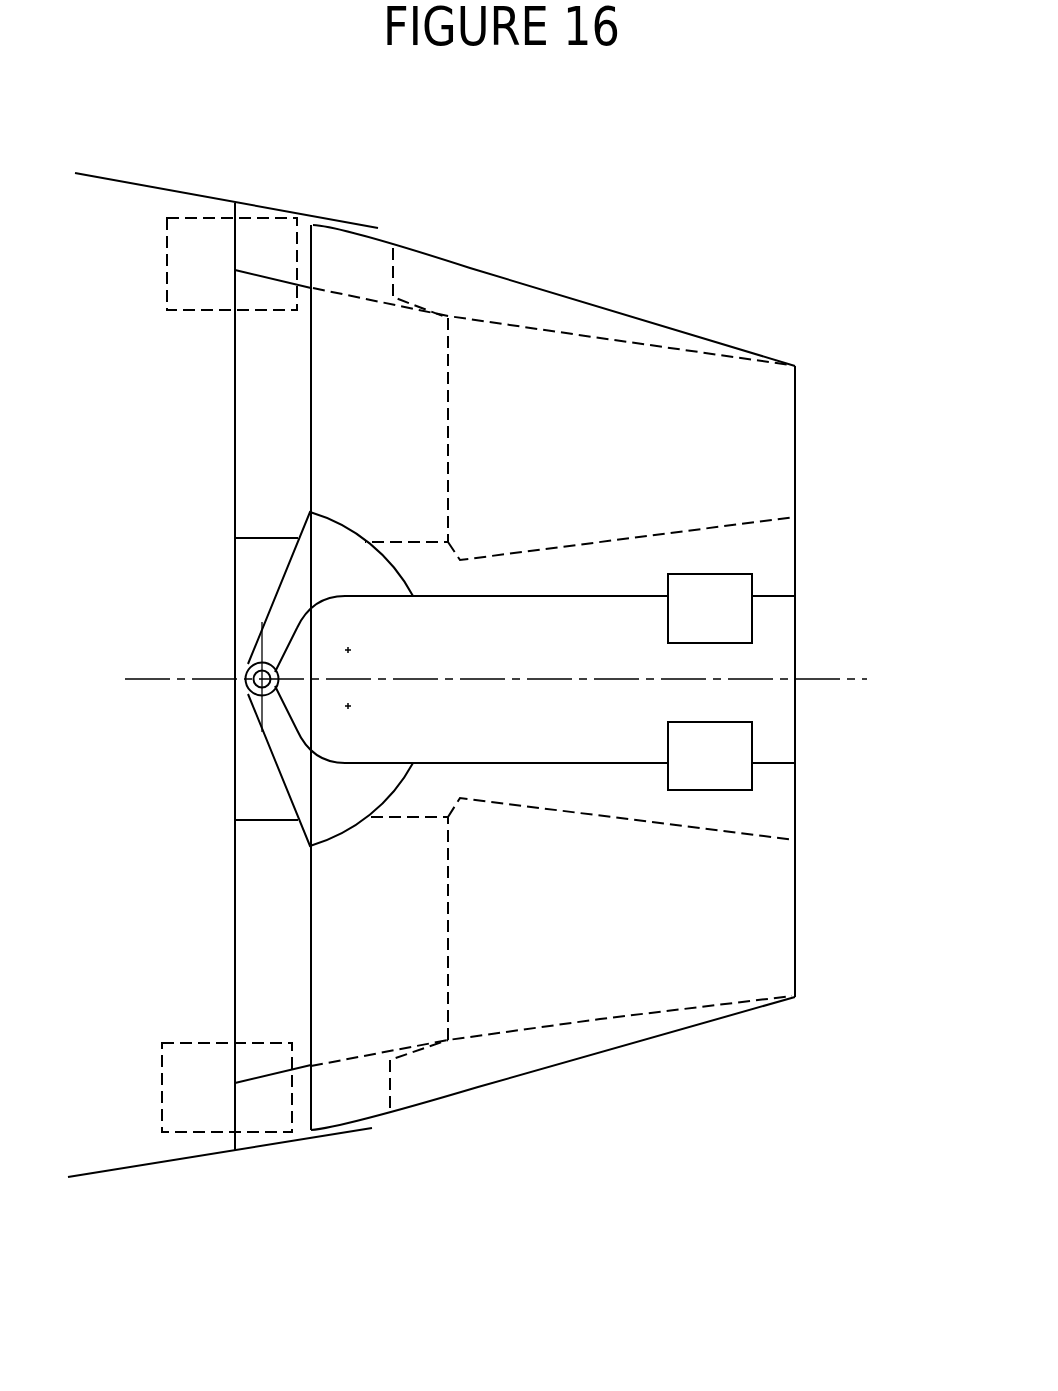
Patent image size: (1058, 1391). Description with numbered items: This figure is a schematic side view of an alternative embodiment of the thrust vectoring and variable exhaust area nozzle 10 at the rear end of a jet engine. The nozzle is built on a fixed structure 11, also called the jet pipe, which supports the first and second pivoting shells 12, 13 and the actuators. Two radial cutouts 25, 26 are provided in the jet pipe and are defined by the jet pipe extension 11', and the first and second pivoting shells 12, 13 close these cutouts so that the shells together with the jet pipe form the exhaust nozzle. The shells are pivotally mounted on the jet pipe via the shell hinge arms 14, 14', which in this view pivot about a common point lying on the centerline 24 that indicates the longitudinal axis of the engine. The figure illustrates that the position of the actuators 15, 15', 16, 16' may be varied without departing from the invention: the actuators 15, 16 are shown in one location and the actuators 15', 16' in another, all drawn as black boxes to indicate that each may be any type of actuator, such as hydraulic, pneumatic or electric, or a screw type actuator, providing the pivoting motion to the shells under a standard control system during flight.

The thrust vectoring and variable exhaust area nozzle 10 is at (223, 631).
The fixed structure 11 is at (437, 352).
The jet pipe extension 11' is at (681, 492).
The first pivoting shell 12 is at (554, 295).
The second pivoting shell 13 is at (553, 1072).
The shell hinge arm 14 is at (263, 565).
The shell hinge arm 14' is at (263, 783).
The first actuator 15 is at (710, 607).
The actuator 15' is at (168, 307).
The second actuator 16 is at (710, 755).
The actuator 16' is at (187, 1037).
The centerline 24 is at (481, 701).
The radial cutout 25 is at (589, 326).
The radial cutout 26 is at (620, 1011).